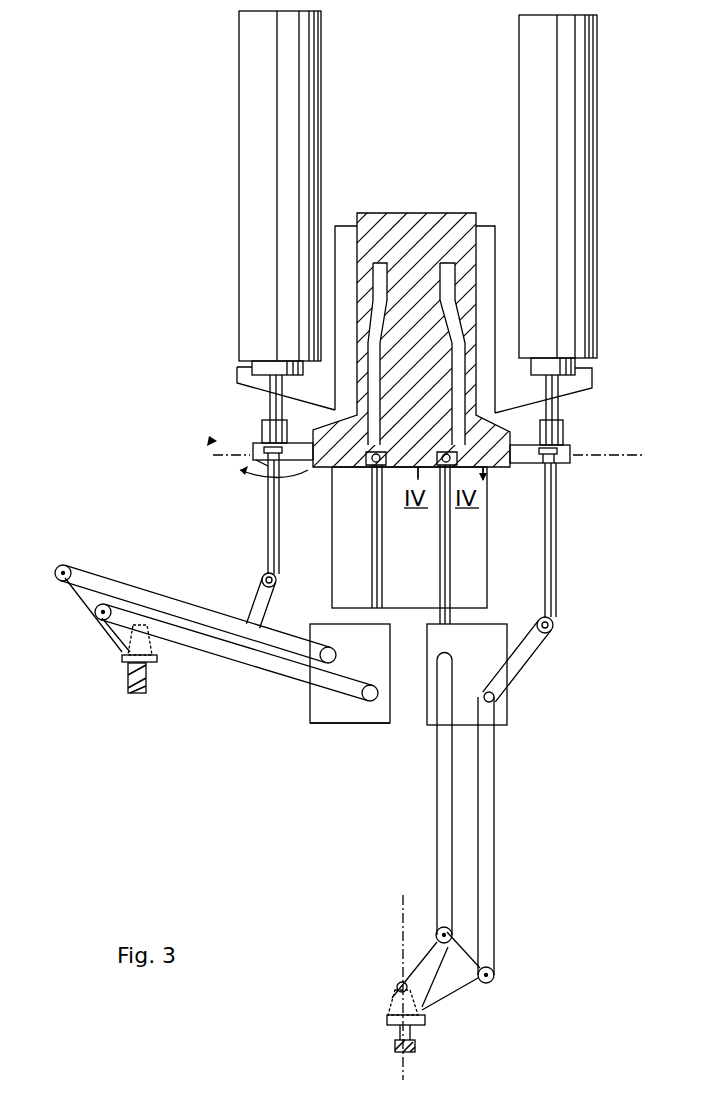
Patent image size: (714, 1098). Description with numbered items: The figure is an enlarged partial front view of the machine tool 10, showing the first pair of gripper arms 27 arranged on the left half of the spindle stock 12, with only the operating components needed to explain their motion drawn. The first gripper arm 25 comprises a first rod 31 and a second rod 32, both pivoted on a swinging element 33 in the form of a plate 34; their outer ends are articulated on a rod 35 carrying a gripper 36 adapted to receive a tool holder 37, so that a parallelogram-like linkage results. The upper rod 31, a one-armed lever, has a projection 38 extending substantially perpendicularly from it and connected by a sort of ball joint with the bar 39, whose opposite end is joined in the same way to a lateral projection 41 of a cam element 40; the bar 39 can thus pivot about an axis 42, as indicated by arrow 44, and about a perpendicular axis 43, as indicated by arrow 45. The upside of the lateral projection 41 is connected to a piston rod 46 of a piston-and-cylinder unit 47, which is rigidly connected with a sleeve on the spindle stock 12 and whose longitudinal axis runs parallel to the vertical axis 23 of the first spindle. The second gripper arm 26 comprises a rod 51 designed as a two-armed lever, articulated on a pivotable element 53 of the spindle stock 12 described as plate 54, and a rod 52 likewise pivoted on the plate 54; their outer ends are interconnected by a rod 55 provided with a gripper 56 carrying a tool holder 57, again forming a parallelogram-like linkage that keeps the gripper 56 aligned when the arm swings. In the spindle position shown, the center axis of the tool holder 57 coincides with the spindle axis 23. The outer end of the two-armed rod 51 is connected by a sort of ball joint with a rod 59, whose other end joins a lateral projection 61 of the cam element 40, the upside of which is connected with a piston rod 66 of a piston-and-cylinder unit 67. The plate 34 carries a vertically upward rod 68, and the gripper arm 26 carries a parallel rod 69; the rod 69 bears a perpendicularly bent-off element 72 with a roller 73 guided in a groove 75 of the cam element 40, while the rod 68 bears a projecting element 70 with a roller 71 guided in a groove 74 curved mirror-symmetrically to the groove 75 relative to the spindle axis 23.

The sausage stuffing apparatus 10 is at (126, 153).
The spindle stock 12 is at (335, 228).
The vertical axis of the first spindle 23 is at (400, 940).
The first gripper arm 25 is at (238, 606).
The second gripper arm 26 is at (496, 866).
The first pair of gripper arms 27 is at (179, 814).
The first rod 31 is at (138, 596).
The second rod 32 is at (217, 655).
The swinging element 33 is at (352, 740).
The plate 34 is at (312, 702).
The rod 35 is at (82, 598).
The gripper 36 is at (122, 658).
The tool holder 37 is at (128, 688).
The projection 38 is at (276, 592).
The bar 39 is at (270, 513).
The cam element 40 is at (440, 228).
The lateral projection 41 is at (318, 416).
The axis 42 is at (238, 452).
The axis 43 is at (258, 465).
The arrow 44 is at (215, 468).
The arrow 45 is at (308, 470).
The piston rod 46 is at (280, 392).
The piston-and-cylinder unit 47 is at (235, 276).
The rod 51 is at (492, 800).
The rod 52 is at (437, 820).
The element 53 is at (512, 706).
The plate 54 is at (510, 695).
The rod 55 is at (448, 977).
The gripper 56 is at (424, 1020).
The tool holder 57 is at (415, 1045).
The rod 59 is at (556, 530).
The lateral projection 61 is at (532, 456).
The piston rod 66 is at (560, 395).
The piston-and-cylinder unit 67 is at (598, 262).
The rod 68 is at (376, 509).
The rod 69 is at (442, 530).
The projecting element 70 is at (372, 456).
The roller 71 is at (386, 460).
The element 72 is at (436, 460).
The roller 73 is at (455, 461).
The groove 74 is at (372, 356).
The groove 75 is at (458, 336).